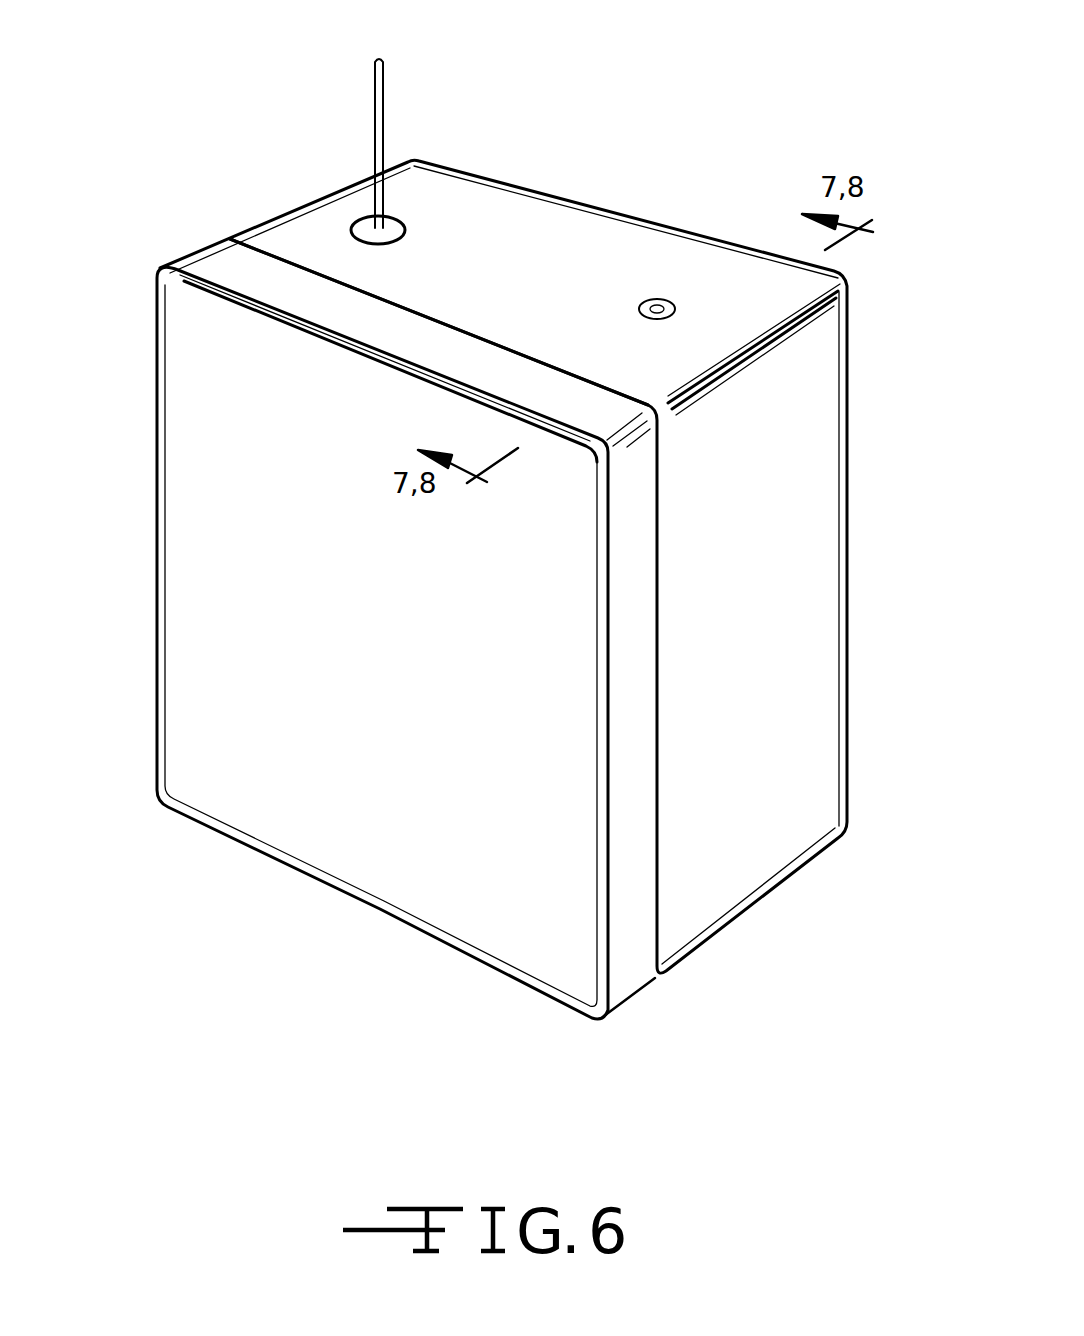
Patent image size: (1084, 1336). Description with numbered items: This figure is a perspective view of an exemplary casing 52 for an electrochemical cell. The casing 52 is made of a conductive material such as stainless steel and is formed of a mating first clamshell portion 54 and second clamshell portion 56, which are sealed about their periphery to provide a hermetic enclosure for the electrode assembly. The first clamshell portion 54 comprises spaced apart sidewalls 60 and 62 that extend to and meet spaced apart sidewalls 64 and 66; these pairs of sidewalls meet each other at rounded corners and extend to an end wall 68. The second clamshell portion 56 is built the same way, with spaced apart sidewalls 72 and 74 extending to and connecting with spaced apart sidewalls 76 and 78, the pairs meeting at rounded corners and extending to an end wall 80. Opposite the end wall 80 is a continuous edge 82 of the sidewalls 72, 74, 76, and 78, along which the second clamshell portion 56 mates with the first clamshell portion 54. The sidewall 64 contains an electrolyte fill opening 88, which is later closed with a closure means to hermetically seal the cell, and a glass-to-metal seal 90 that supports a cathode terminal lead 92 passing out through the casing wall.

The casing 52 is at (258, 222).
The first clamshell portion 54 is at (762, 682).
The second clamshell portion 56 is at (250, 653).
The sidewall 60 is at (338, 188).
The sidewall 62 is at (767, 400).
The sidewall 64 is at (592, 232).
The sidewall 66 is at (763, 833).
The end wall 68 is at (698, 233).
The sidewall 72 is at (152, 490).
The sidewall 74 is at (620, 963).
The sidewall 76 is at (221, 265).
The sidewall 78 is at (414, 934).
The end wall 80 is at (276, 812).
The continuous edge 82 is at (302, 268).
The electrolyte fill opening 88 is at (657, 301).
The glass-to-metal seal 90 is at (407, 232).
The cathode terminal lead 92 is at (385, 108).